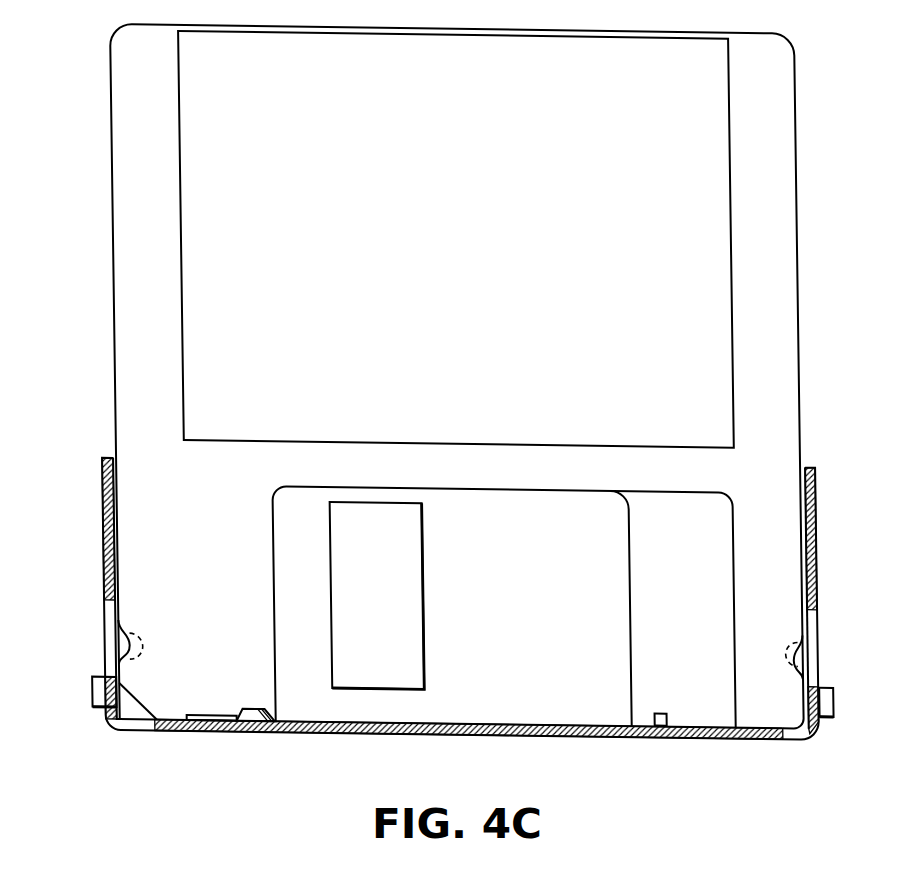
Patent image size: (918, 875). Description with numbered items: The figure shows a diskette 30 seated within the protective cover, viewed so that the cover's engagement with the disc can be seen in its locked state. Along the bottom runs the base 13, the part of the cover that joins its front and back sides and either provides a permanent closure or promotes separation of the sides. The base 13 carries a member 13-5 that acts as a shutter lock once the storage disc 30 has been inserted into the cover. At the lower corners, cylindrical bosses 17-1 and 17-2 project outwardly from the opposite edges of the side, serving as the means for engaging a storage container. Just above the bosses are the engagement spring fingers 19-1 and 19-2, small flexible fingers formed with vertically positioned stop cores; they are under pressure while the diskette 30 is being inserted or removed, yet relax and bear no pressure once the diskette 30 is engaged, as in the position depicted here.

The disc 30 is at (480, 238).
The base 13 is at (568, 735).
The shutter lock member 13-5 is at (265, 716).
The cylindrical boss 17-1 is at (92, 698).
The cylindrical boss 17-2 is at (833, 716).
The engagement spring finger 19-1 is at (117, 651).
The engagement spring finger 19-2 is at (813, 652).